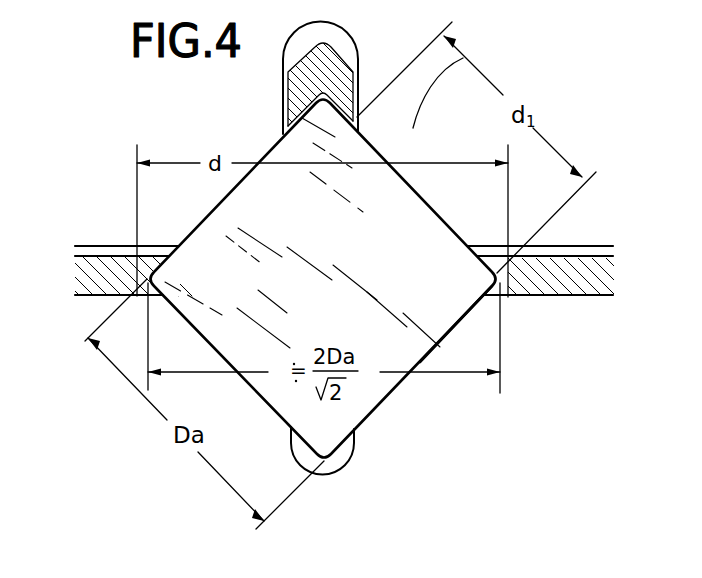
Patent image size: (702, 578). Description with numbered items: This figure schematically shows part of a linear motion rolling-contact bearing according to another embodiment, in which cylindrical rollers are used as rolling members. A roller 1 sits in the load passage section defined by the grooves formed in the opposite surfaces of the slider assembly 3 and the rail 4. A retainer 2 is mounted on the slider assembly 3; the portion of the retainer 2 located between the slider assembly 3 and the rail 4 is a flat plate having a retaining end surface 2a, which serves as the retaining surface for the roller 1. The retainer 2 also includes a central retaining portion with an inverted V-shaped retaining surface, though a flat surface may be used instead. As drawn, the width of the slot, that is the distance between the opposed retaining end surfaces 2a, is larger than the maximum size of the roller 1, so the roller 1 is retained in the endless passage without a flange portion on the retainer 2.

The roller 1 is at (365, 388).
The retainer 2 is at (583, 280).
The retaining end surface 2a is at (288, 76).
The slider assembly 3 is at (427, 382).
The rail 4 is at (463, 58).